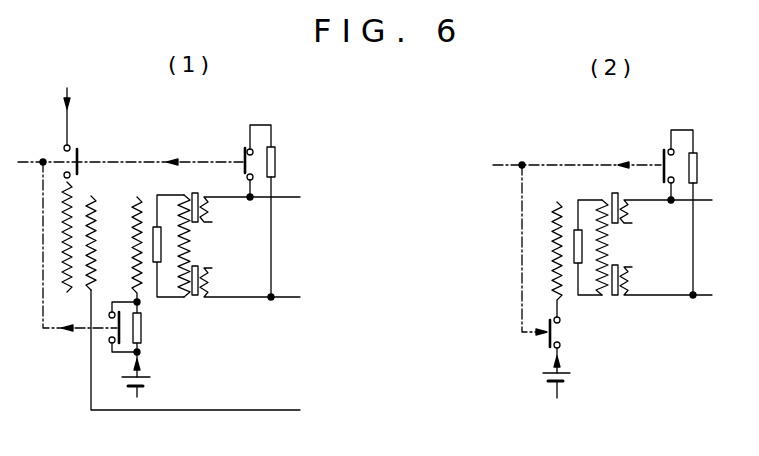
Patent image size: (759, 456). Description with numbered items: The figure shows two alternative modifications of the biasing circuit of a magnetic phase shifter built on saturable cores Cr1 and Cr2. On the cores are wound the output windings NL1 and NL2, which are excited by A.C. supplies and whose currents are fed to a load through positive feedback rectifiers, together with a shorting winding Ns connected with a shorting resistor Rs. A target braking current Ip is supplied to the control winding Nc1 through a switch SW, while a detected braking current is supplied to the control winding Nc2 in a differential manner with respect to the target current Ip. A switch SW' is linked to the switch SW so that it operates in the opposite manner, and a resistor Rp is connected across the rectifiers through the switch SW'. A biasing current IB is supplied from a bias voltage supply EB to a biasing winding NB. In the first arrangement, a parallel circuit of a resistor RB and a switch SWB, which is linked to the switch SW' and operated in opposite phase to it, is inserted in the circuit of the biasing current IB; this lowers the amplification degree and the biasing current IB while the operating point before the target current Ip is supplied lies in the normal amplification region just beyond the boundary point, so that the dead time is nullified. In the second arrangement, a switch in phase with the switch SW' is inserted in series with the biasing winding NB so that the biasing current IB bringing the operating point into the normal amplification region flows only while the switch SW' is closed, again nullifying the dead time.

The target braking current Ip is at (75, 115).
The switch SW is at (89, 157).
The control winding Nc1 is at (63, 278).
The control winding Nc2 is at (106, 191).
The biasing winding NB is at (136, 247).
The shorting resistor Rs is at (158, 227).
The shorting winding Ns is at (190, 245).
The saturable core Cr1 is at (197, 196).
The saturable core Cr2 is at (191, 296).
The output winding NL1 is at (206, 207).
The output winding NL2 is at (206, 276).
The switch SW' is at (452, 161).
The resistor Rp is at (275, 155).
The resistor RB is at (142, 326).
The switch SWB is at (110, 333).
The biasing current IB is at (355, 362).
The bias voltage supply EB is at (143, 386).